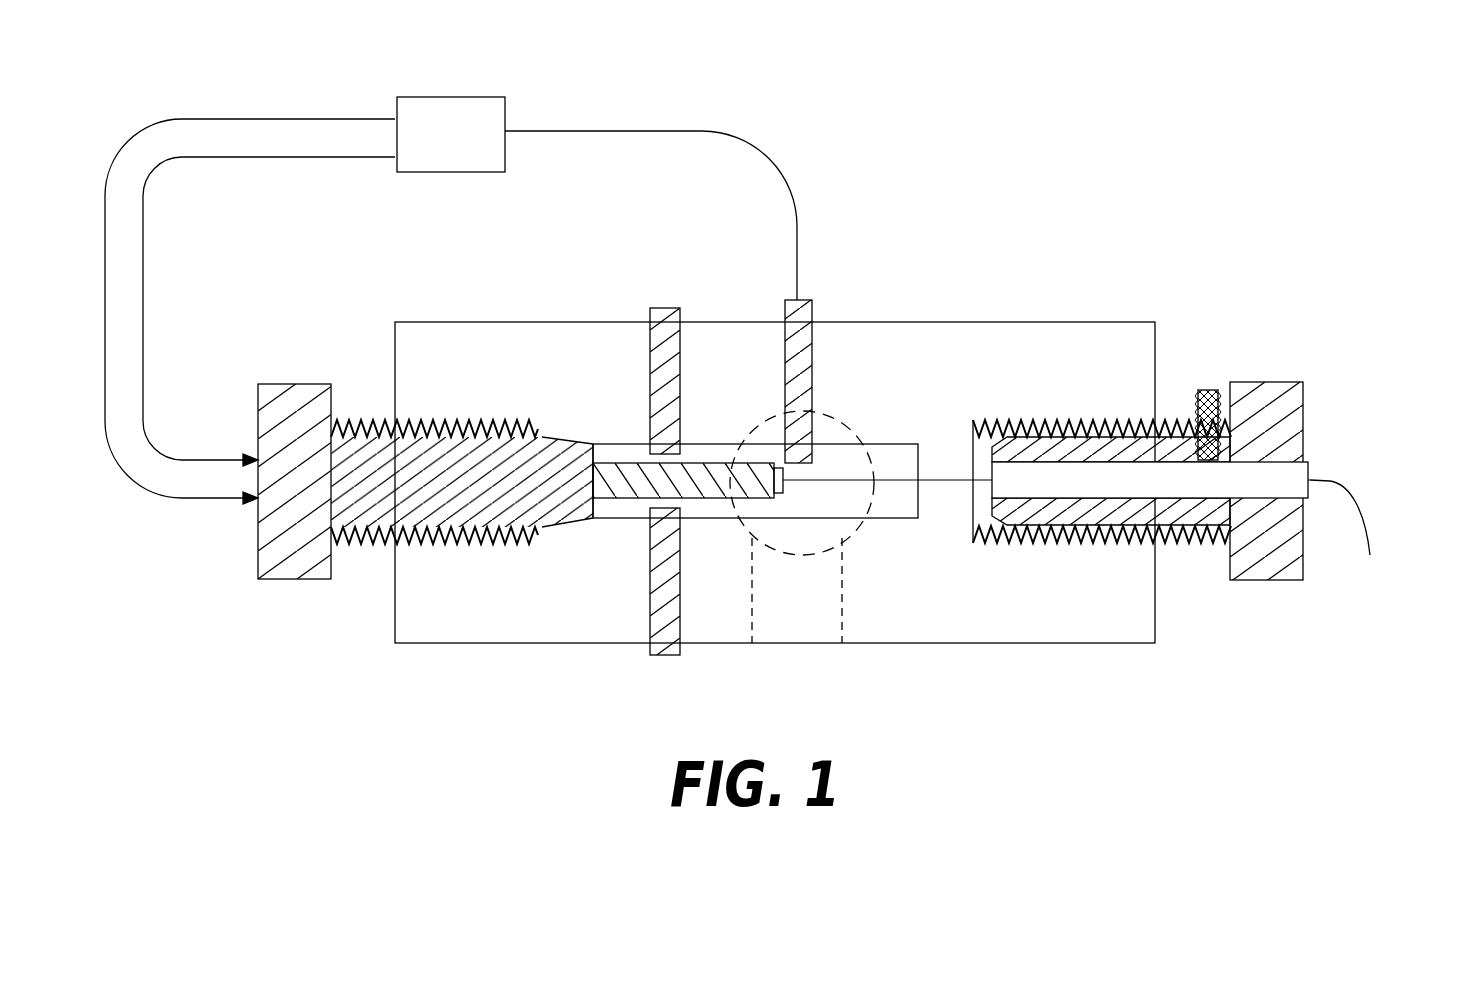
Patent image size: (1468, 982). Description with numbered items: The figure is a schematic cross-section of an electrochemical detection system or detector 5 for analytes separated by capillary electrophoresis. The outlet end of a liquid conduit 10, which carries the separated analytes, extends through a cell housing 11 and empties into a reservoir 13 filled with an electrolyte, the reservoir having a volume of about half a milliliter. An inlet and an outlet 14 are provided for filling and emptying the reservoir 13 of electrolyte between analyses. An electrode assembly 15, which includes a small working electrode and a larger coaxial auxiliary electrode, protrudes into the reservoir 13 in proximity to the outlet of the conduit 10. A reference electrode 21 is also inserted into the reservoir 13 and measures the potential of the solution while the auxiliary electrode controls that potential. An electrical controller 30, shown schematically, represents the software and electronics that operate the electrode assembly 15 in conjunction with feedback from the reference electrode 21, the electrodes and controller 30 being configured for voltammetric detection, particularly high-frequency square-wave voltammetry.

The electrochemical detection system 5 is at (950, 173).
The liquid conduit 10 is at (1352, 493).
The cell housing 11 is at (1160, 322).
The reservoir 13 is at (817, 498).
The inlet and outlet 14 is at (838, 600).
The electrode assembly 15 is at (713, 505).
The reference electrode 21 is at (812, 357).
The electrical controller 30 is at (470, 152).